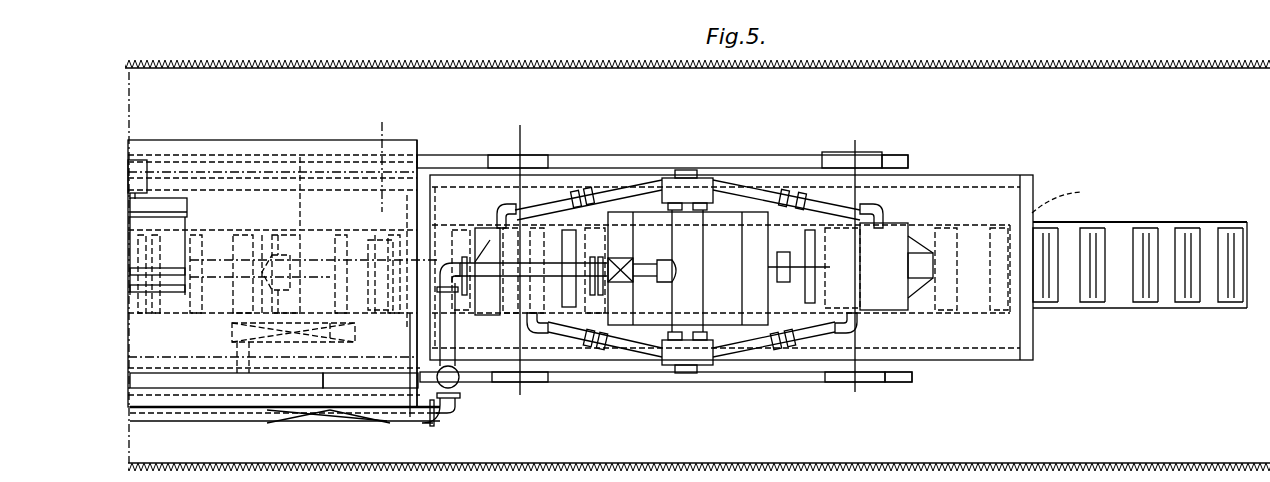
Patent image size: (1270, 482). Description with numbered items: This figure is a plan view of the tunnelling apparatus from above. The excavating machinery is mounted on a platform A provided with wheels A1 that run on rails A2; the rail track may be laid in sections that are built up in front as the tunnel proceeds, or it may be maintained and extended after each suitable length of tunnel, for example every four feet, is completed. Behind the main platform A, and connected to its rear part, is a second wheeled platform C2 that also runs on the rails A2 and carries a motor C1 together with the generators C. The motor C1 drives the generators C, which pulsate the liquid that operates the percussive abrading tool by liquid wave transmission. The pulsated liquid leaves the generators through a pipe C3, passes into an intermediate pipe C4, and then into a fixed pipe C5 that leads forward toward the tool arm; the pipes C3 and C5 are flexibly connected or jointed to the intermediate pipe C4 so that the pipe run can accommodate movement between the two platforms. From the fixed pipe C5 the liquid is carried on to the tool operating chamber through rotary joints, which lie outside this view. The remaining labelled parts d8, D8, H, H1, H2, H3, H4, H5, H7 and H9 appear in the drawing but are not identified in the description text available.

The platform A is at (333, 198).
The wheels A1 is at (396, 170).
The rails A2 is at (587, 160).
The bracket box d8 is at (136, 170).
The support bracket D8 is at (172, 213).
The truss frame H9 is at (300, 157).
The gear housing H3 is at (272, 253).
The drive member H1 is at (383, 240).
The frame member H4 is at (237, 382).
The longitudinal beam H5 is at (205, 380).
The lower beam H7 is at (313, 377).
The fixed pipe C5 is at (146, 418).
The wheeled platform C2 is at (985, 175).
The generators C is at (512, 243).
The motor C1 is at (755, 237).
The pipe C3 is at (535, 312).
The intermediate pipe C4 is at (455, 335).
The conveyor H is at (1105, 230).
The conveyor section H2 is at (1197, 205).